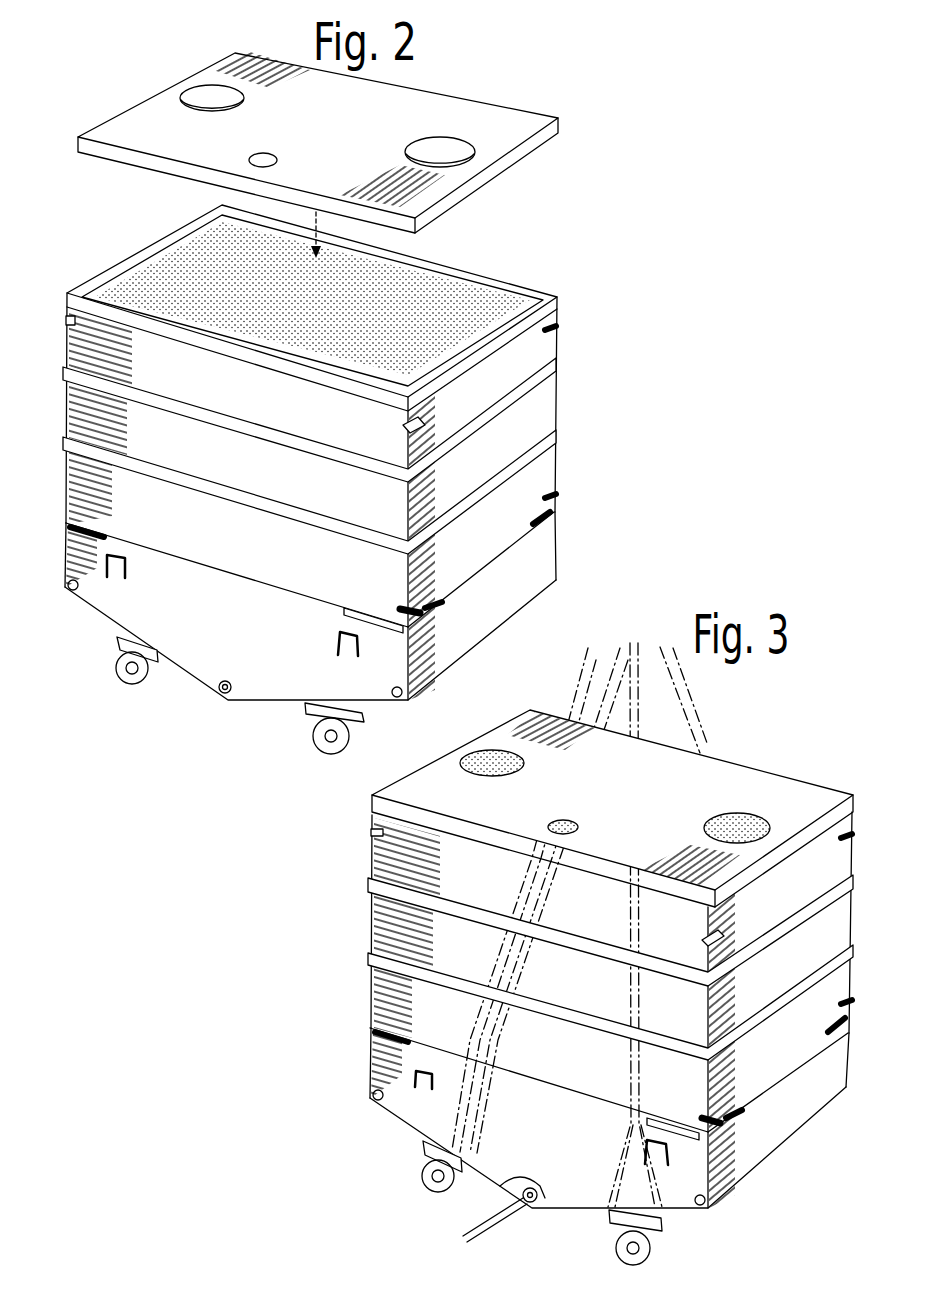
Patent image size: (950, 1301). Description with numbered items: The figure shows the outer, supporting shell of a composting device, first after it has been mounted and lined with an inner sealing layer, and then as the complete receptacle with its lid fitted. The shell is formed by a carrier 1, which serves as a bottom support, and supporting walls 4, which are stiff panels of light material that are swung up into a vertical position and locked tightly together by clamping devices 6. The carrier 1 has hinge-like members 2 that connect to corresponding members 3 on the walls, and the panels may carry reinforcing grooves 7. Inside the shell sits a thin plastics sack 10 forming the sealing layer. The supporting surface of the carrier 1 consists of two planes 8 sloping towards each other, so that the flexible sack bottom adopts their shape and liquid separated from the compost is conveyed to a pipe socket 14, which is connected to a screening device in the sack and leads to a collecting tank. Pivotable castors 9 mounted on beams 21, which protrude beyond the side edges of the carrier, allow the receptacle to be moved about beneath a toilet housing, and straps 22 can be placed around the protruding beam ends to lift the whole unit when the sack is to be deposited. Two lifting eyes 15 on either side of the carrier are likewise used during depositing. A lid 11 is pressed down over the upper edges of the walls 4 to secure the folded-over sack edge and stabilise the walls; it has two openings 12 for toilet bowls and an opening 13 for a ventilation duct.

In FIG. 2, the carrier 1 is at (527, 563).
In FIG. 3, the carrier 1 is at (775, 1123).
In FIG. 2, the hinge-like members 2 is at (382, 607).
In FIG. 3, the hinge-like members 2 is at (695, 1120).
In FIG. 2, the corresponding members 3 is at (345, 610).
In FIG. 3, the corresponding members 3 is at (628, 1120).
In FIG. 2, the supporting walls 4 is at (537, 410).
In FIG. 3, the supporting walls 4 is at (820, 933).
In FIG. 2, the clamping devices 6 is at (410, 425).
In FIG. 3, the clamping devices 6 is at (728, 935).
In FIG. 2, the reinforcing grooves 7 is at (550, 438).
In FIG. 3, the reinforcing grooves 7 is at (427, 975).
In FIG. 2, the sloping planes 8 is at (92, 610).
In FIG. 3, the sloping planes 8 is at (393, 1118).
In FIG. 2, the pivotable castors 9 is at (130, 684).
In FIG. 3, the pivotable castors 9 is at (622, 1240).
In FIG. 2, the plastics sack 10 is at (472, 300).
In FIG. 2, the lid 11 is at (466, 106).
In FIG. 3, the lid 11 is at (692, 773).
In FIG. 2, the openings 12 is at (203, 97).
In FIG. 3, the openings 12 is at (490, 752).
In FIG. 2, the opening 13 is at (252, 158).
In FIG. 3, the opening 13 is at (568, 822).
In FIG. 2, the pipe socket 14 is at (225, 693).
In FIG. 3, the pipe socket 14 is at (520, 1188).
In FIG. 2, the lifting eyes 15 is at (102, 562).
In FIG. 3, the lifting eyes 15 is at (392, 1063).
In FIG. 2, the beams 21 is at (207, 706).
In FIG. 3, the beams 21 is at (508, 1217).
In FIG. 3, the straps 22 is at (478, 946).